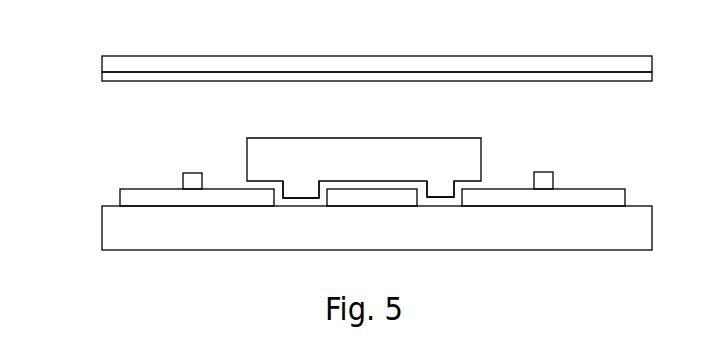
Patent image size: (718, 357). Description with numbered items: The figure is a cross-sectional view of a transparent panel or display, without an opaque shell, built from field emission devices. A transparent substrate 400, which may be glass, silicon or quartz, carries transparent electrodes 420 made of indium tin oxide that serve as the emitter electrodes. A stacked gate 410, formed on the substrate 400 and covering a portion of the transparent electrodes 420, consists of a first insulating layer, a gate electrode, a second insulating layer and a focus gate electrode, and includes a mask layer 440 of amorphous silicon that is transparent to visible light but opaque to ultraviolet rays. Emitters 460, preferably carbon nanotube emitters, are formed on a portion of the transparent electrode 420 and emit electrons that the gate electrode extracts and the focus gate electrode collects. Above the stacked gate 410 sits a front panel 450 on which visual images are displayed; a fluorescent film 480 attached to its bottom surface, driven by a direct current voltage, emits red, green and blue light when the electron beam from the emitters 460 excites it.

The transparent substrate 400 is at (377, 228).
The stacked gate 410 is at (364, 168).
The transparent electrodes 420 is at (615, 197).
The mask layer 440 is at (475, 177).
The front panel 450 is at (625, 64).
The emitters 460 is at (195, 180).
The fluorescent film 480 is at (625, 73).